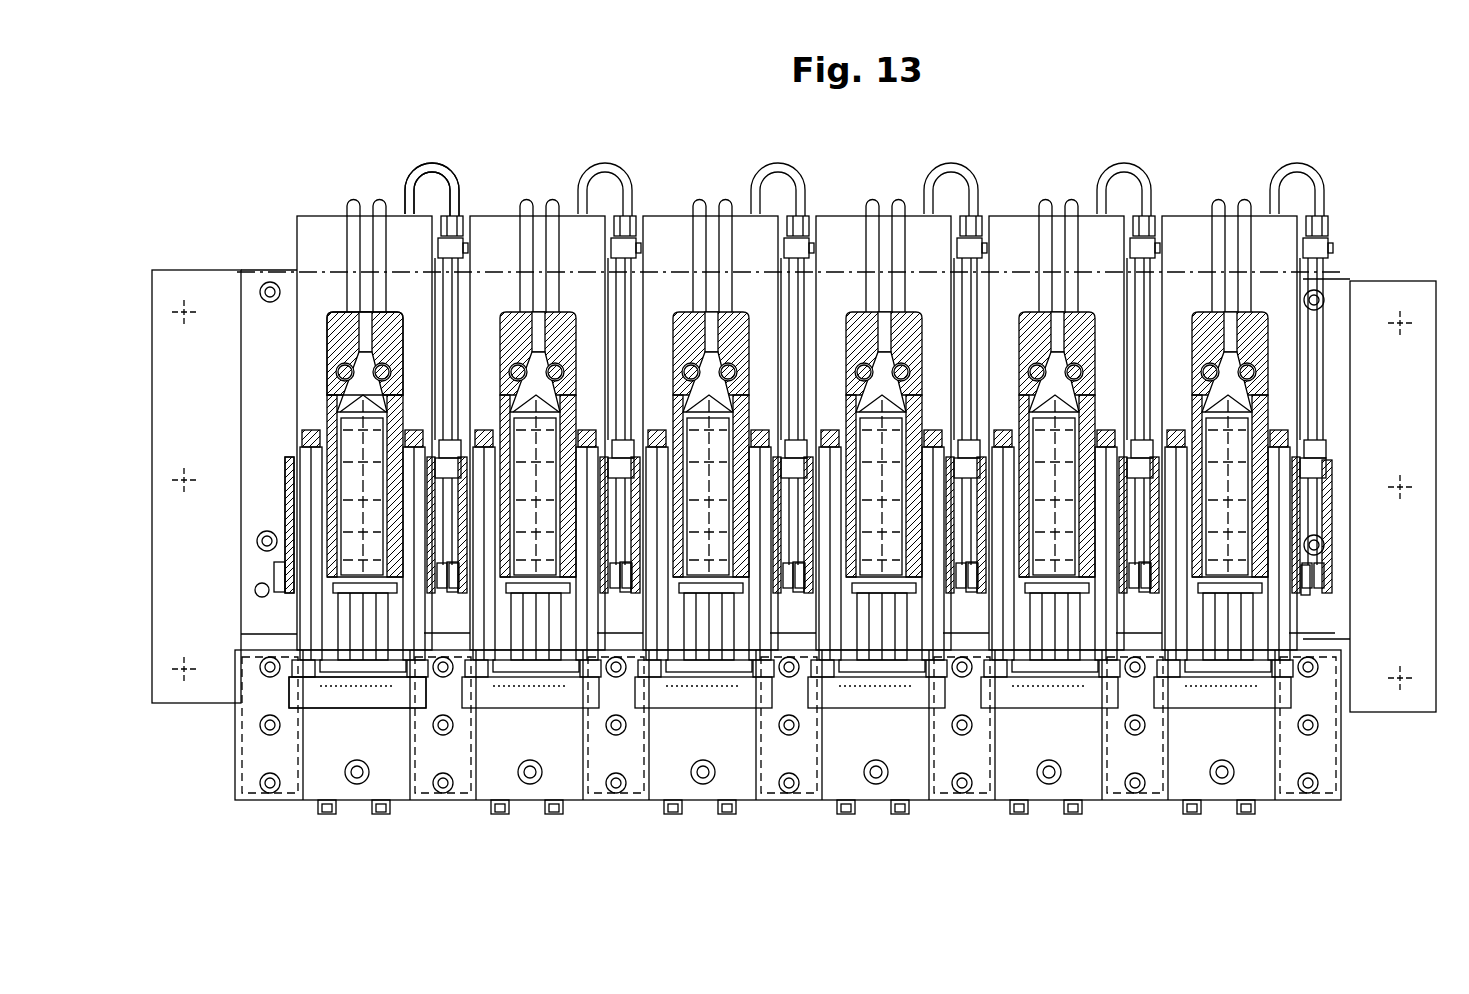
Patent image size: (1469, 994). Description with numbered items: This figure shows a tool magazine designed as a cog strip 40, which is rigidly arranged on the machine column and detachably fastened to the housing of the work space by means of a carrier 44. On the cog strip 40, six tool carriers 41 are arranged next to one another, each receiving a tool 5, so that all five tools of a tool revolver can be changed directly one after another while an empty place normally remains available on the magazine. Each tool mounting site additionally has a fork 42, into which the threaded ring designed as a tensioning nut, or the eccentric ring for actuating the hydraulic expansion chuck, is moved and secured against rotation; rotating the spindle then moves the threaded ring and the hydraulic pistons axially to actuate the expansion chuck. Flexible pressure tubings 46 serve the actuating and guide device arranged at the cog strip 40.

The cog strip 40 is at (1350, 164).
The tool carrier 41 is at (348, 350).
The fork 42 is at (410, 695).
The carrier 44 is at (214, 292).
The flexible pressure tubing 46 is at (452, 185).
The tool 5 is at (289, 510).